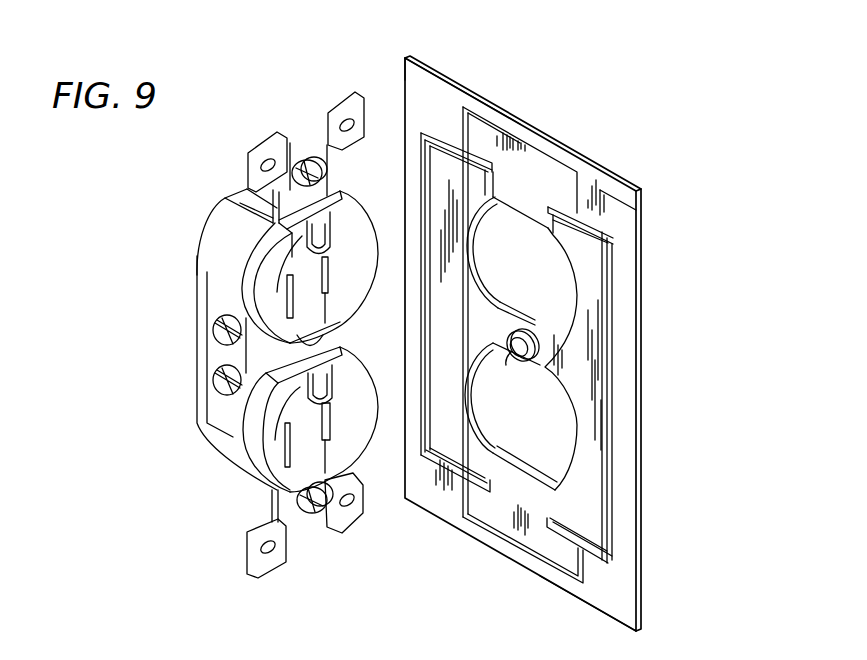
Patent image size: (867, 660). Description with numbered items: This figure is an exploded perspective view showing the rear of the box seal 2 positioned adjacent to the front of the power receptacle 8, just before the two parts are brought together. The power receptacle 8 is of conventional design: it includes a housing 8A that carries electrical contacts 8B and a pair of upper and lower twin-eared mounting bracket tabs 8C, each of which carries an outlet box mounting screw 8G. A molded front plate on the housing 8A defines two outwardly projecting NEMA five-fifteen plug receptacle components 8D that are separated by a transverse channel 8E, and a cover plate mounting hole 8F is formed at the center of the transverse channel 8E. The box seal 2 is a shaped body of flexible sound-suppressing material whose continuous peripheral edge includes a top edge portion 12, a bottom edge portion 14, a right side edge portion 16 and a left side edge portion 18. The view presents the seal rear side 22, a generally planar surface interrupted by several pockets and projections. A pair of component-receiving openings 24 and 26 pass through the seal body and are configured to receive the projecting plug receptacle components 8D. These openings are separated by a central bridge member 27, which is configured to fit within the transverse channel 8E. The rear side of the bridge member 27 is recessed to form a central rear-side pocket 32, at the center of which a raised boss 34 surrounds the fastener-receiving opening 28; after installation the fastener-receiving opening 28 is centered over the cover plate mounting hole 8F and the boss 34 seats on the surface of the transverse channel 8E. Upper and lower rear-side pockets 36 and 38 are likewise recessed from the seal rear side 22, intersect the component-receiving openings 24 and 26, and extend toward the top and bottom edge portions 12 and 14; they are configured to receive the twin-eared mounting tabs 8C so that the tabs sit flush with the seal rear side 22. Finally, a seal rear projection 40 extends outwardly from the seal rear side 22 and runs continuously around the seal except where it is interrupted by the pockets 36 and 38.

The box seal 2 is at (629, 152).
The power receptacle 8 is at (251, 332).
The housing 8A is at (227, 432).
The electrical contacts 8B is at (215, 323).
The twin-eared mounting bracket tabs 8C is at (300, 163).
The plug receptacle components 8D is at (360, 220).
The transverse channel 8E is at (355, 337).
The cover plate mounting hole 8F is at (358, 313).
The mounting screws 8G is at (306, 162).
The top edge portion 12 is at (497, 103).
The bottom edge portion 14 is at (575, 600).
The right side edge portion 16 is at (405, 80).
The left side edge portion 18 is at (640, 383).
The seal rear side 22 is at (623, 223).
The component-receiving opening 24 is at (473, 220).
The component-receiving opening 26 is at (483, 433).
The central bridge member 27 is at (545, 320).
The fastener-receiving opening 28 is at (512, 357).
The central rear-side pocket 32 is at (485, 317).
The raised boss 34 is at (530, 366).
The upper rear-side pocket 36 is at (548, 178).
The lower rear-side pocket 38 is at (493, 512).
The seal rear projection 40 is at (610, 500).